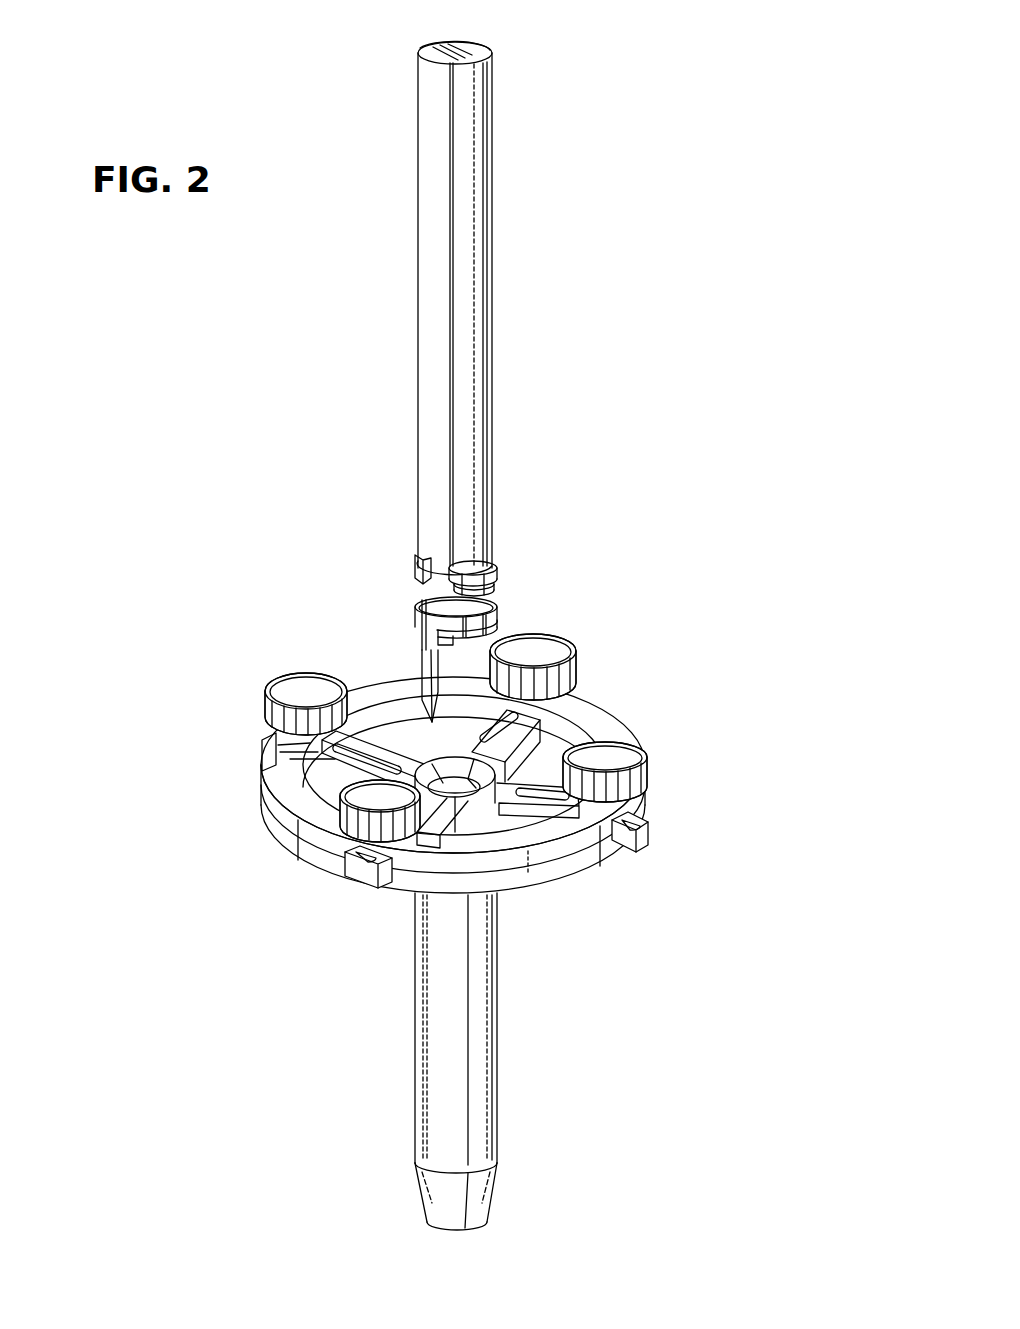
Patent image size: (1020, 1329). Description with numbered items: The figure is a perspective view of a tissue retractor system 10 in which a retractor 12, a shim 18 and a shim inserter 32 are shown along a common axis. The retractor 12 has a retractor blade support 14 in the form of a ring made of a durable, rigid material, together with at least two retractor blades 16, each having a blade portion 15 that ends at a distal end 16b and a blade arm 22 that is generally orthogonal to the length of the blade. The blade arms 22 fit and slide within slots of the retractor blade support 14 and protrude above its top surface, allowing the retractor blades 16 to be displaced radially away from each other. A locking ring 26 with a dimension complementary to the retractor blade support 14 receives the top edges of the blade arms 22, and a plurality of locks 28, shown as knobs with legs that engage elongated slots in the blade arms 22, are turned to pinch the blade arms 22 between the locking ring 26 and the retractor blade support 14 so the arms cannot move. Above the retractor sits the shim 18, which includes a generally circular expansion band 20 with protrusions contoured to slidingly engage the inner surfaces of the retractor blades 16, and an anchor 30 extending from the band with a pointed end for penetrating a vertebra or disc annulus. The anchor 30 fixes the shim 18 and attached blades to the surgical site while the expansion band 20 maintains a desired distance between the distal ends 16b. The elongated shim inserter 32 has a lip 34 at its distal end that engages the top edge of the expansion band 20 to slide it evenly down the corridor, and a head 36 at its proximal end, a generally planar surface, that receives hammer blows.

The retractor system 10 is at (708, 340).
The retractor 12 is at (455, 1061).
The retractor blade support 14 is at (583, 862).
The blade portion 15 is at (497, 1073).
The retractor blade 16 is at (509, 1061).
The distal end 16b is at (497, 1200).
The shim 18 is at (513, 611).
The expansion band 20 is at (416, 608).
The blade arm 22 is at (545, 735).
The locking ring 26 is at (632, 805).
The locks 28 is at (493, 781).
The anchor 30 is at (420, 658).
The shim inserter 32 is at (517, 200).
The lip 34 is at (497, 562).
The head 36 is at (466, 48).